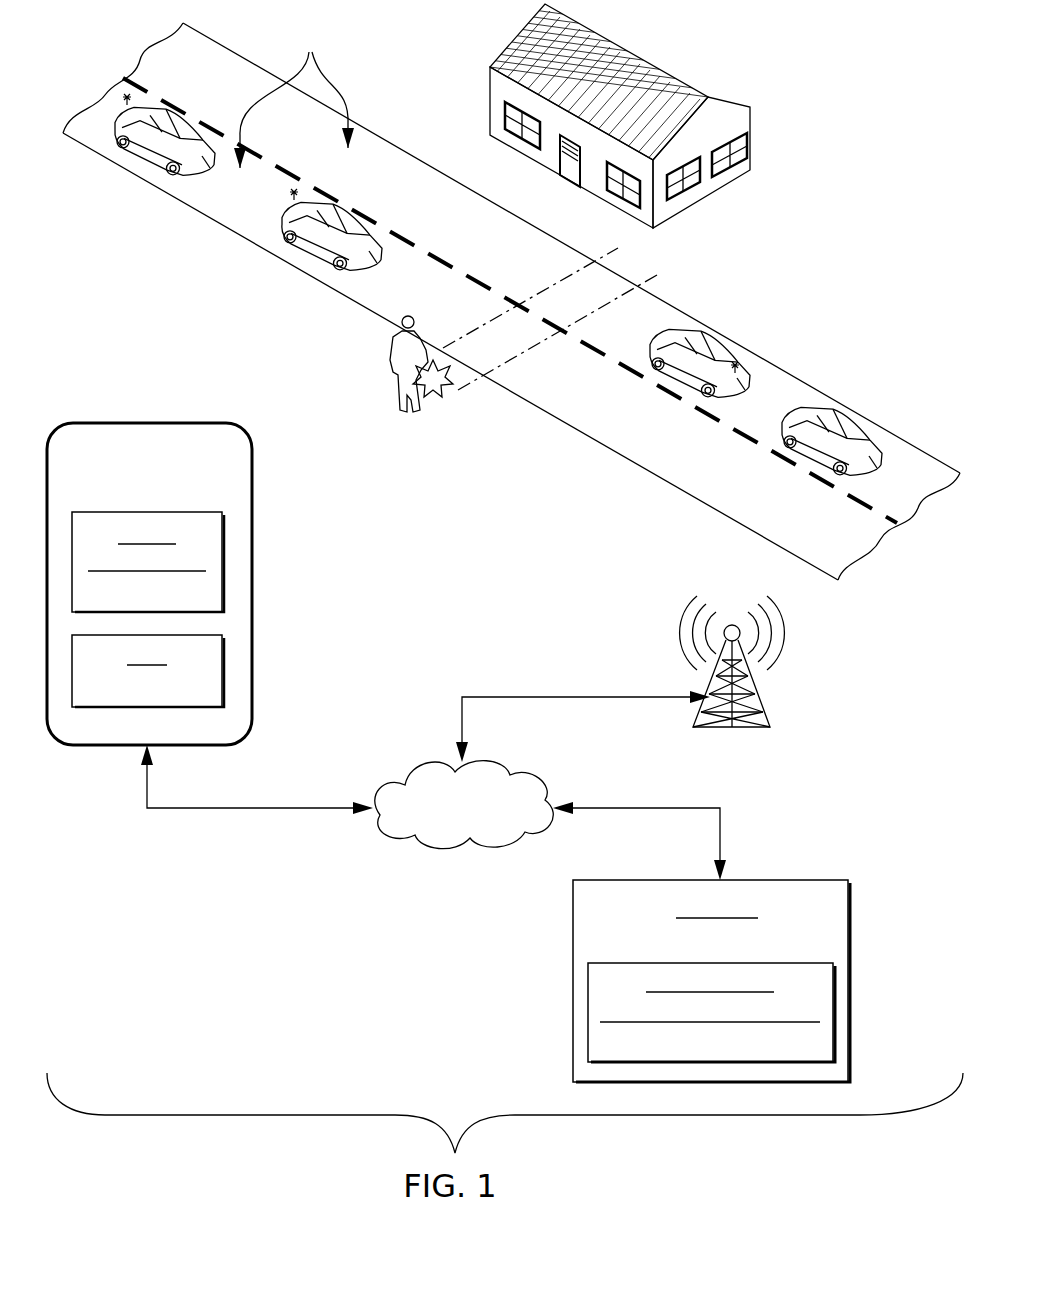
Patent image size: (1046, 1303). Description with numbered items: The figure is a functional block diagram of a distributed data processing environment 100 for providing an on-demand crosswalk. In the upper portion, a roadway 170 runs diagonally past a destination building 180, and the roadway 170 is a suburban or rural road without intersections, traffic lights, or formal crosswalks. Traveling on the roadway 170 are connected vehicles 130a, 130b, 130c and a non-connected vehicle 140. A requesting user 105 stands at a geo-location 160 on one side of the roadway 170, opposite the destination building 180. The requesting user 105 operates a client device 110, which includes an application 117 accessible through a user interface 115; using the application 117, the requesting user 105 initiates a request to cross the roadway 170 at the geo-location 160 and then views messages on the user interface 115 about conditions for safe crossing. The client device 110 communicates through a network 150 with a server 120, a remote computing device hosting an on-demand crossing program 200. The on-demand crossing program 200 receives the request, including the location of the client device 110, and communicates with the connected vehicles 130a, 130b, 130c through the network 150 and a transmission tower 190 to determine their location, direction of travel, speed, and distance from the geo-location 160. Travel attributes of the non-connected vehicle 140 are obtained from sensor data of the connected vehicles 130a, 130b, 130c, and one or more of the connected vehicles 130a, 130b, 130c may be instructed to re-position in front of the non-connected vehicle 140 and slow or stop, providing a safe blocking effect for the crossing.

The distributed data processing environment 100 is at (790, 56).
The requesting user 105 is at (392, 361).
The client device 110 is at (194, 584).
The user interface 115 is at (129, 603).
The application (app) 117 is at (129, 702).
The server 120 is at (698, 950).
The connected vehicle 130a is at (143, 162).
The connected vehicle 130b is at (305, 257).
The connected vehicle 130c is at (710, 332).
The non-connected vehicle 140 is at (845, 410).
The network 150 is at (420, 847).
The geo-location 160 is at (430, 399).
The roadway 170 is at (294, 98).
The destination building 180 is at (490, 88).
The transmission tower 190 is at (756, 690).
The on-demand crossing program 200 is at (698, 1055).